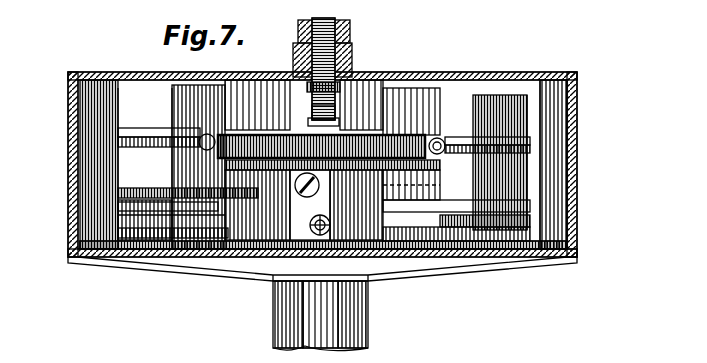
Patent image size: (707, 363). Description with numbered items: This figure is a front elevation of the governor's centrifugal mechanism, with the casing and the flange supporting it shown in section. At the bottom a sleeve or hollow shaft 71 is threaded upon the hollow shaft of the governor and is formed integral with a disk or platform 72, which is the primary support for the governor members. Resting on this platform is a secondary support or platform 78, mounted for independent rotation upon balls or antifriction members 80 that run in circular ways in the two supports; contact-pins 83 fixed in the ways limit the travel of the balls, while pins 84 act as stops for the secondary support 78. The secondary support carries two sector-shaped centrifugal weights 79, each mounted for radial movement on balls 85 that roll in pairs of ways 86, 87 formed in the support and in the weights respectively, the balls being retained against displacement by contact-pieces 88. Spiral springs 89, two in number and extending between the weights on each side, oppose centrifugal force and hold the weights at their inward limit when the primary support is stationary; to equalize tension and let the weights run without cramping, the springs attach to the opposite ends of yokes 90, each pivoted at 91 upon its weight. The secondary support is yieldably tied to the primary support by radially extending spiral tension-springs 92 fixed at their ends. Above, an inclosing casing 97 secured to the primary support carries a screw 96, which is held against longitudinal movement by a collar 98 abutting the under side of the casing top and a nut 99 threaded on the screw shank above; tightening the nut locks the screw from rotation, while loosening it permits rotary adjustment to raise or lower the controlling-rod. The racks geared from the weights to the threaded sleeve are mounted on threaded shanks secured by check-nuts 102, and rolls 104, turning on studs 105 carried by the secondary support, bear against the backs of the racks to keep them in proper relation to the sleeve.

The sleeve or hollow shaft 71 is at (368, 334).
The disk or platform 72 is at (550, 264).
The secondary support or platform 78 is at (530, 220).
The centrifugal members or weights 79 is at (163, 90).
The balls or antifriction members 80 is at (160, 258).
The contact-pins 83 is at (148, 265).
The pins 84 is at (353, 203).
The balls 85 is at (465, 197).
The ways 86 is at (115, 210).
The ways 87 is at (437, 189).
The contact-pieces 88 is at (118, 195).
The springs 89 is at (422, 138).
The yokes 90 is at (155, 145).
The pivot 91 is at (148, 126).
The springs 92 is at (285, 266).
The screw 96 is at (322, 60).
The inclosing casing 97 is at (477, 82).
The collar 98 is at (305, 86).
The nut 99 is at (350, 36).
The check-nuts 102 is at (262, 108).
The rolls 104 is at (363, 112).
The studs 105 is at (333, 107).